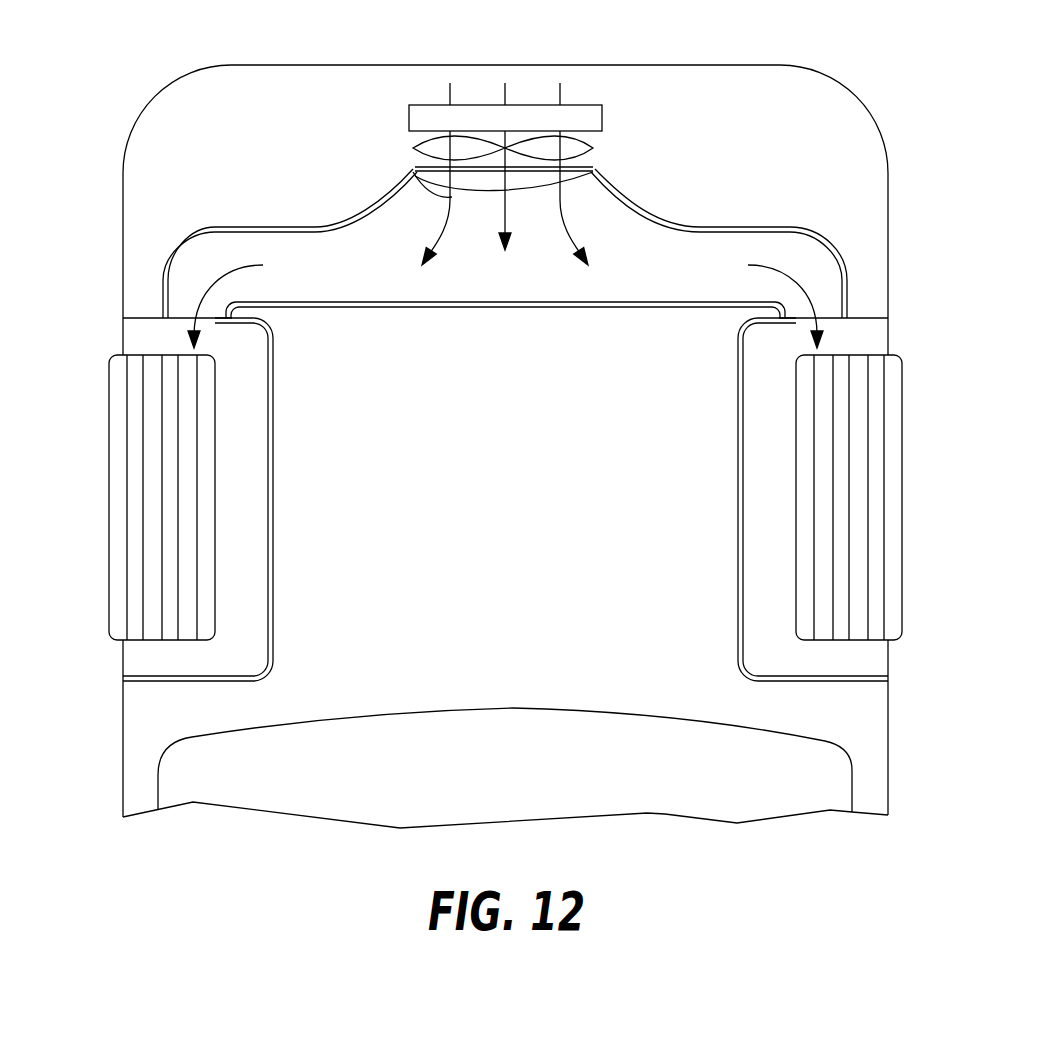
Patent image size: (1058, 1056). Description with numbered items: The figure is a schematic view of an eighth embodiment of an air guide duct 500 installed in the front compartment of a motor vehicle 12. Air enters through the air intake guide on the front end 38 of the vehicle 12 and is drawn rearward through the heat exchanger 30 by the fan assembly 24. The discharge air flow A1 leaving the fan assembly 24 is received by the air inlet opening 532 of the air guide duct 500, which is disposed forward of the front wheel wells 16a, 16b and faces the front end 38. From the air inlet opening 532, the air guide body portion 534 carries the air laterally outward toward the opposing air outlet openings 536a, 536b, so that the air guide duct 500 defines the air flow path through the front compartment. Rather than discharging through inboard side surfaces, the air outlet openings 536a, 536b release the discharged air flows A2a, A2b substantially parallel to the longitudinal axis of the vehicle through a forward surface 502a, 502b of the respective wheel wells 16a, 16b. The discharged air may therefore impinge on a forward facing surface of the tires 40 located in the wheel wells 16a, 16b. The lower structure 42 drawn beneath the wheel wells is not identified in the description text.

The motor vehicle 12 is at (840, 53).
The front end 38 is at (340, 65).
The heat exchanger 30 is at (602, 121).
The fan assembly 24 is at (595, 153).
The air inlet opening 532 is at (433, 160).
The air guide body portion 534 is at (366, 226).
The air outlet opening 536a is at (183, 312).
The air outlet opening 536b is at (830, 317).
The discharge air flow A1 is at (440, 178).
The discharged air flow A2a is at (253, 268).
The discharged air flow A2b is at (750, 268).
The air guide duct 500 is at (430, 306).
The forward surface 502a is at (217, 324).
The forward surface 502b is at (794, 324).
The wheel well 16a is at (145, 661).
The wheel well 16b is at (868, 658).
The tire 40 is at (140, 432).
The base 42 is at (683, 795).